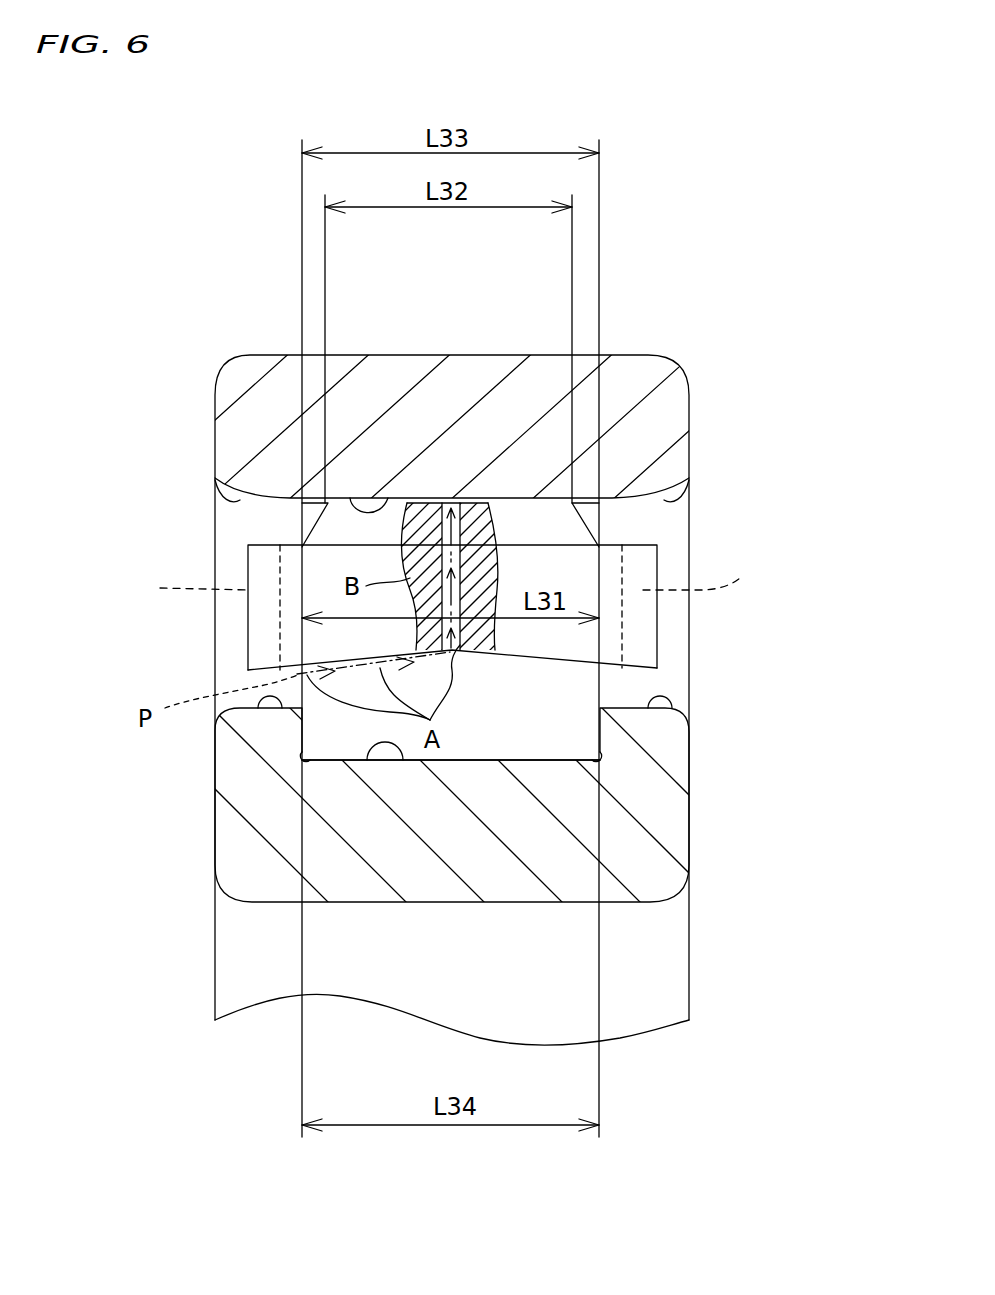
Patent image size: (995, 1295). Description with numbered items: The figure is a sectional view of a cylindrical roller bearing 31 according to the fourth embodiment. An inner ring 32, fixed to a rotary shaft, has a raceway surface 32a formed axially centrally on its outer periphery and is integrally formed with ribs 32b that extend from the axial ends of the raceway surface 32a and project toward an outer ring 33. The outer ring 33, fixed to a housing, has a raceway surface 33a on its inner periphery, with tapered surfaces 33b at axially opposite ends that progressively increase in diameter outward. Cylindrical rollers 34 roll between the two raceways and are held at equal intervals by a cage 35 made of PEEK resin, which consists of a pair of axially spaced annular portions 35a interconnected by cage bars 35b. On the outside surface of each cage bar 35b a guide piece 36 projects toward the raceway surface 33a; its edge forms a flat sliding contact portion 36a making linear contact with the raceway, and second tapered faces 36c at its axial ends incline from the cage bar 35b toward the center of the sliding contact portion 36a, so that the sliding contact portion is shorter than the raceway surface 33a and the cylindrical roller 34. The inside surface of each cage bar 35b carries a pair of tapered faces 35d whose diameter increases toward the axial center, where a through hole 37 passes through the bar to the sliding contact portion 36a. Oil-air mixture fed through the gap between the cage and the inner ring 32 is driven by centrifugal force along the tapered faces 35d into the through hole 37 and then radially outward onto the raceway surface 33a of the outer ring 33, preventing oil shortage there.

The cylindrical roller bearing 31 is at (688, 328).
The inner ring 32 is at (642, 813).
The raceway surface 32a is at (400, 762).
The rib 32b is at (260, 700).
The outer ring 33 is at (655, 428).
The raceway surface 33a is at (350, 497).
The tapered surface 33b is at (213, 483).
The cylindrical roller 34 is at (575, 727).
The cage 35 is at (660, 612).
The annular portion 35a is at (452, 573).
The cage bar 35b is at (613, 655).
The tapered face 35d is at (300, 674).
The guide piece 36 is at (490, 505).
The sliding contact portion 36a is at (453, 503).
The second tapered face 36c is at (305, 522).
The through hole 37 is at (407, 505).